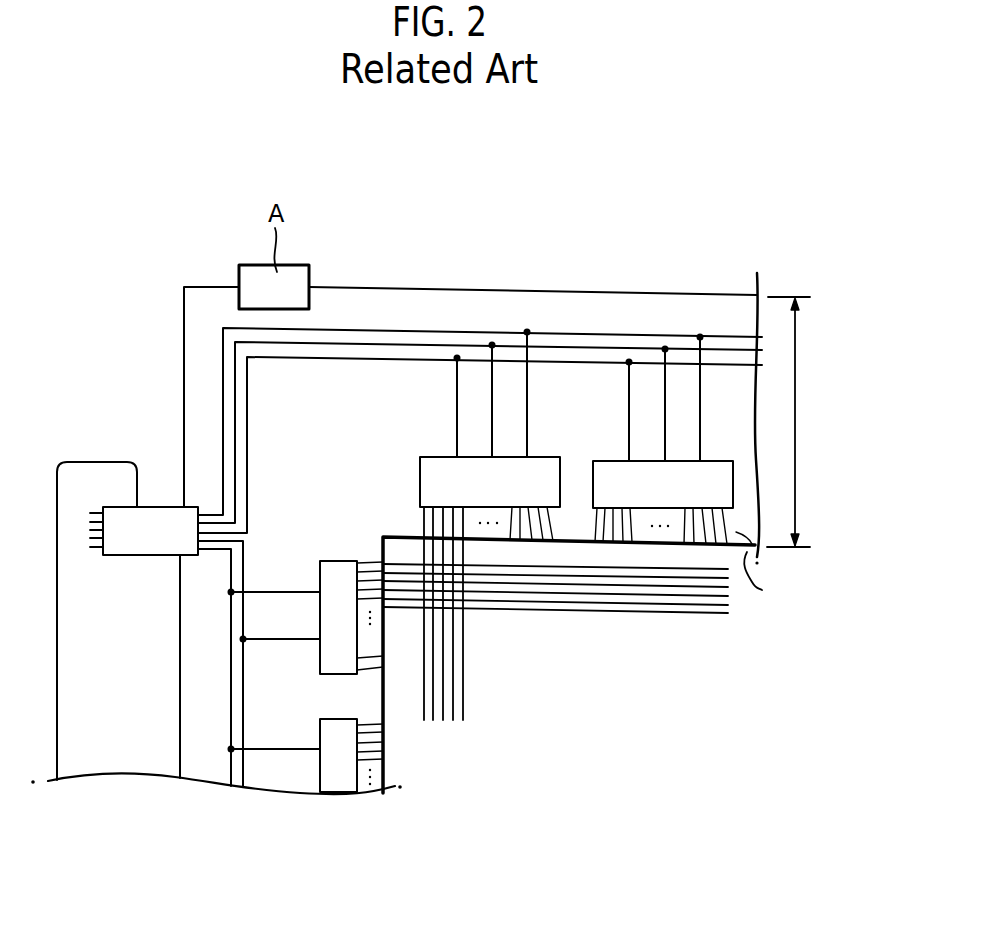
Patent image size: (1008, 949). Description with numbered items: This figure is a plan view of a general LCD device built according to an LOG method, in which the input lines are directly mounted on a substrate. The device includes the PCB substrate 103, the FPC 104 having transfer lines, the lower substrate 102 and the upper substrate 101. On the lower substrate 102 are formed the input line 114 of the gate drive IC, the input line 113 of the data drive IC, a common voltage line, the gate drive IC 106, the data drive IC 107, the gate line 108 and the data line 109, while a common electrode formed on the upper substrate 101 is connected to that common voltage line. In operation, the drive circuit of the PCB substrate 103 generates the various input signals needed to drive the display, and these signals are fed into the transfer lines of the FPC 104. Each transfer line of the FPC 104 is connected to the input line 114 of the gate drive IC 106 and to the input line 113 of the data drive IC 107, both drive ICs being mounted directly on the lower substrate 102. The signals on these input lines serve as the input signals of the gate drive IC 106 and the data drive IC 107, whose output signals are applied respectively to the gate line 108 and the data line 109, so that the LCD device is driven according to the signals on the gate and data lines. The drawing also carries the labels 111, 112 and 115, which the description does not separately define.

The upper substrate 101 is at (603, 750).
The lower substrate 102 is at (800, 419).
The PCB substrate 103 is at (98, 461).
The FPC 104 is at (165, 507).
The gate drive IC 106 is at (320, 675).
The data drive IC 107 is at (560, 477).
The gate line 108 is at (633, 614).
The data line 109 is at (463, 650).
The seal pattern 111 is at (769, 582).
The gate driver integrated circuit 112 is at (367, 793).
The input line of the data drive IC 113 is at (419, 328).
The input line of the gate drive IC 114 is at (227, 767).
The data link lines 115 is at (455, 405).